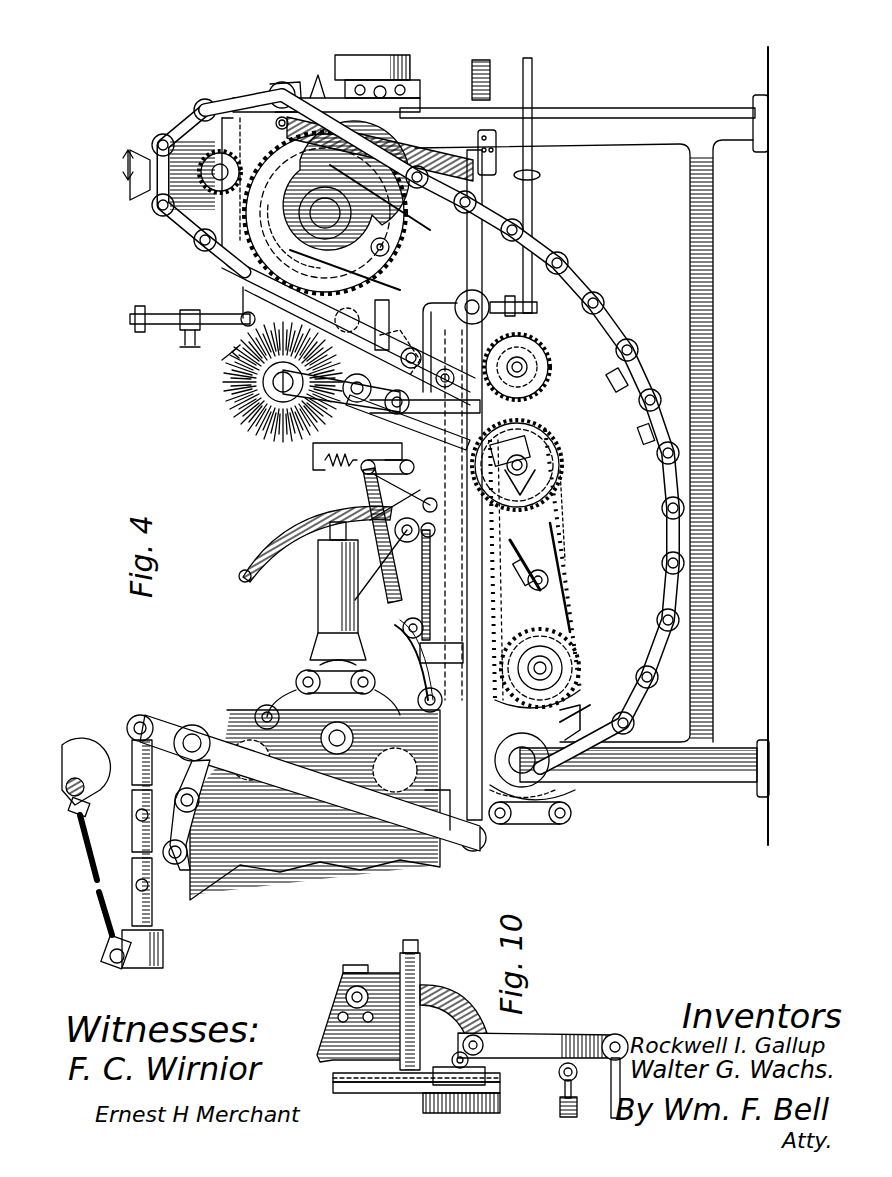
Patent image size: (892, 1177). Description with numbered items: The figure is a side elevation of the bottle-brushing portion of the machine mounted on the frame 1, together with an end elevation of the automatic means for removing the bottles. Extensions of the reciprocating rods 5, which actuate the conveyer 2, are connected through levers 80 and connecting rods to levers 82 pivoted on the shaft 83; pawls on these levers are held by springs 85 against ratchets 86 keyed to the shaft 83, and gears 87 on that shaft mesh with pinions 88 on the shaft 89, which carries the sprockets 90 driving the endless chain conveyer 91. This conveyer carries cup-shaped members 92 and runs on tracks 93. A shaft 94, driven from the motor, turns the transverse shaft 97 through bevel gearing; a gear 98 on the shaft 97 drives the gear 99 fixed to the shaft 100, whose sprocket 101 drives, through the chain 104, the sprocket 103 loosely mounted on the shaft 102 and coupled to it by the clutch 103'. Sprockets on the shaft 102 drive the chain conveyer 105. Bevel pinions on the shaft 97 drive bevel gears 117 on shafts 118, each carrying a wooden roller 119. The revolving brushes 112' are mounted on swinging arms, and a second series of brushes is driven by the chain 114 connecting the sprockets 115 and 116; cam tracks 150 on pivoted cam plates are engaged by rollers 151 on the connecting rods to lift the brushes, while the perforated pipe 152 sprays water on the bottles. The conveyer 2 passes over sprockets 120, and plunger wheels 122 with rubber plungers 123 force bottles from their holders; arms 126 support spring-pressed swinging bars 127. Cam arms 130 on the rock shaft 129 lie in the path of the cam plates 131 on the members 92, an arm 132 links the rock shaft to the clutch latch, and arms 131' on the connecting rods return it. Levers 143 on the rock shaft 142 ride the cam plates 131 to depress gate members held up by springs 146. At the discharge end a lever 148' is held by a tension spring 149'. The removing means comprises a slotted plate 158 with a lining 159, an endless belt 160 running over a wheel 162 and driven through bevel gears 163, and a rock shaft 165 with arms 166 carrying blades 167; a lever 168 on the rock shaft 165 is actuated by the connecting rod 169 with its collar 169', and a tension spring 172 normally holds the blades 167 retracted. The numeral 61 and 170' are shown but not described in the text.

In FIG. 4, the frame 1 is at (600, 108).
In FIG. 4, the conveyer 2 is at (250, 732).
In FIG. 4, the reciprocating rods 5 is at (132, 762).
In FIG. 4, the bar 61 is at (446, 810).
In FIG. 4, the levers 80 is at (230, 722).
In FIG. 4, the levers 82 is at (470, 290).
In FIG. 4, the shaft 83 is at (405, 212).
In FIG. 4, the springs 85 is at (408, 238).
In FIG. 4, the ratchets 86 is at (349, 205).
In FIG. 4, the gears 87 is at (340, 100).
In FIG. 4, the pinions 88 is at (212, 150).
In FIG. 4, the shaft 89 is at (222, 165).
In FIG. 4, the sprockets 90 is at (170, 130).
In FIG. 4, the endless chain conveyer 91 is at (580, 285).
In FIG. 4, the cup-shaped members 92 is at (582, 405).
In FIG. 4, the tracks 93 is at (225, 258).
In FIG. 4, the shaft 94 is at (655, 335).
In FIG. 4, the shaft 97 is at (530, 355).
In FIG. 4, the gear 98 is at (550, 372).
In FIG. 4, the gear 99 is at (565, 455).
In FIG. 4, the shaft 100 is at (560, 470).
In FIG. 4, the sprocket 101 is at (560, 440).
In FIG. 4, the shaft 102 is at (582, 650).
In FIG. 4, the sprocket 103 is at (585, 707).
In FIG. 4, the clutch 103' is at (580, 713).
In FIG. 4, the chain 104 is at (565, 545).
In FIG. 4, the chain conveyer 105 is at (575, 600).
In FIG. 4, the revolving brushes 112' is at (231, 403).
In FIG. 4, the chain 114 is at (272, 440).
In FIG. 4, the sprocket 115 is at (232, 402).
In FIG. 4, the sprocket 116 is at (330, 460).
In FIG. 4, the bevel gear 117 is at (410, 345).
In FIG. 4, the shaft 118 is at (357, 402).
In FIG. 4, the roller 119 is at (382, 348).
In FIG. 4, the sprockets 120 is at (290, 692).
In FIG. 4, the plunger wheels 122 is at (525, 560).
In FIG. 4, the plungers 123 is at (516, 564).
In FIG. 4, the arms 126 is at (262, 550).
In FIG. 4, the swinging bars 127 is at (310, 600).
In FIG. 4, the rock shaft 129 is at (330, 472).
In FIG. 4, the cam arms 130 is at (505, 700).
In FIG. 4, the cam plates 131 is at (386, 440).
In FIG. 4, the arms 131' is at (409, 660).
In FIG. 4, the arm 132 is at (366, 476).
In FIG. 4, the rock shaft 142 is at (415, 610).
In FIG. 4, the levers 143 is at (378, 565).
In FIG. 4, the spring 146 is at (480, 295).
In FIG. 4, the lever 148' is at (278, 80).
In FIG. 4, the tension spring 149' is at (380, 119).
In FIG. 4, the cam tracks 150 is at (478, 160).
In FIG. 4, the rollers 151 is at (466, 375).
In FIG. 4, the perforated pipe 152 is at (188, 312).
In FIG. 10, the slotted plate 158 is at (335, 1090).
In FIG. 10, the lining 159 is at (356, 1095).
In FIG. 10, the endless belt 160 is at (492, 1107).
In FIG. 10, the wheel 162 is at (415, 1095).
In FIG. 4, the bevel gears 163 is at (137, 312).
In FIG. 10, the rock shaft 165 is at (470, 992).
In FIG. 10, the arms 166 is at (382, 977).
In FIG. 10, the blade 167 is at (330, 1000).
In FIG. 10, the lever 168 is at (575, 1034).
In FIG. 4, the connecting rod 169 is at (526, 184).
In FIG. 10, the connecting rod 169 is at (601, 1096).
In FIG. 4, the collar 169' is at (542, 174).
In FIG. 4, the bracket 170' is at (505, 280).
In FIG. 10, the tension spring 172 is at (565, 1102).